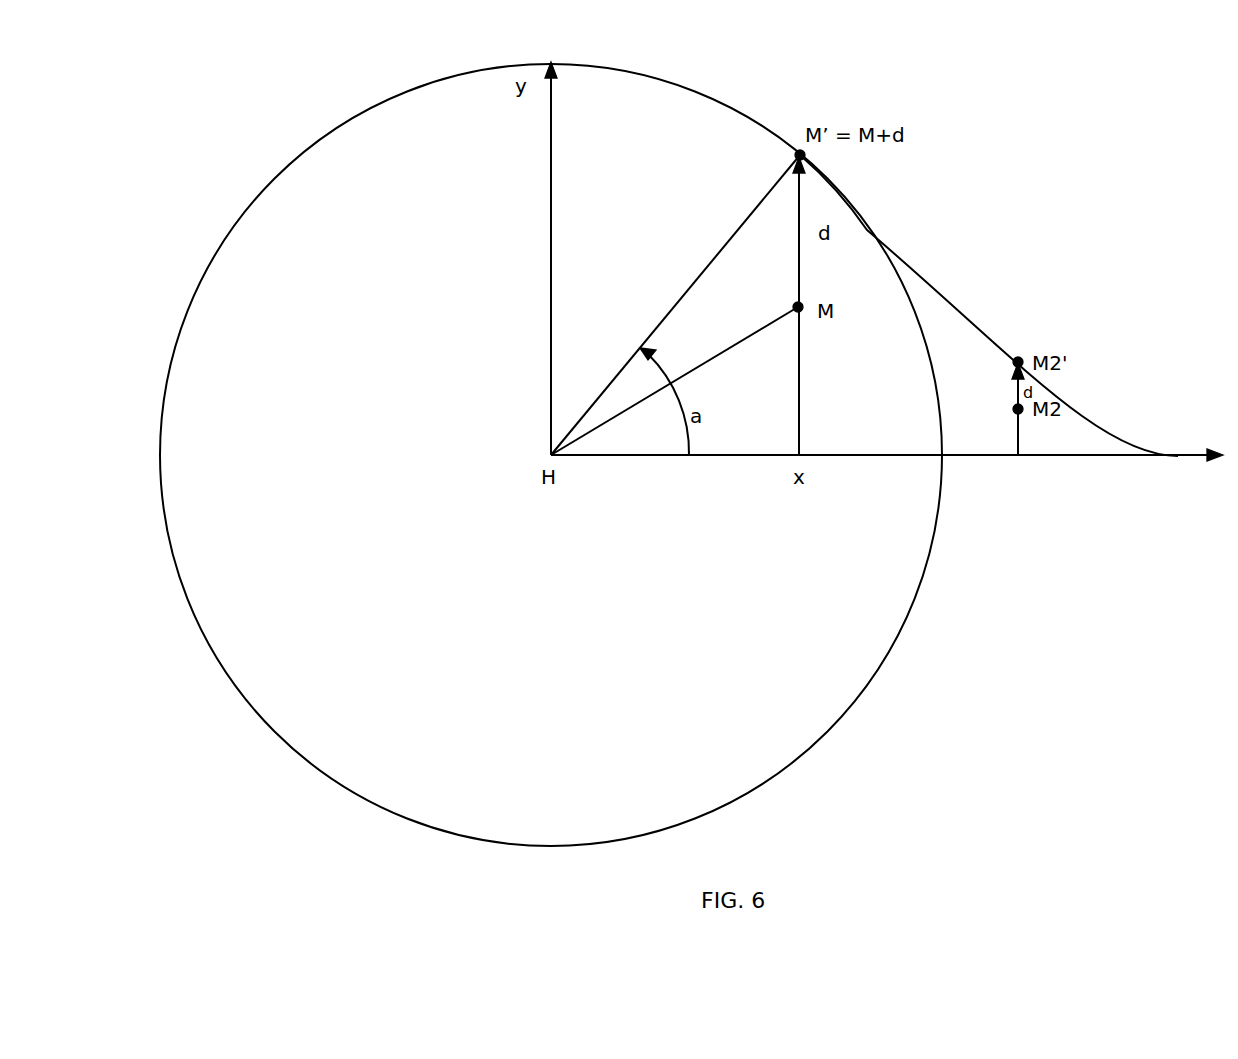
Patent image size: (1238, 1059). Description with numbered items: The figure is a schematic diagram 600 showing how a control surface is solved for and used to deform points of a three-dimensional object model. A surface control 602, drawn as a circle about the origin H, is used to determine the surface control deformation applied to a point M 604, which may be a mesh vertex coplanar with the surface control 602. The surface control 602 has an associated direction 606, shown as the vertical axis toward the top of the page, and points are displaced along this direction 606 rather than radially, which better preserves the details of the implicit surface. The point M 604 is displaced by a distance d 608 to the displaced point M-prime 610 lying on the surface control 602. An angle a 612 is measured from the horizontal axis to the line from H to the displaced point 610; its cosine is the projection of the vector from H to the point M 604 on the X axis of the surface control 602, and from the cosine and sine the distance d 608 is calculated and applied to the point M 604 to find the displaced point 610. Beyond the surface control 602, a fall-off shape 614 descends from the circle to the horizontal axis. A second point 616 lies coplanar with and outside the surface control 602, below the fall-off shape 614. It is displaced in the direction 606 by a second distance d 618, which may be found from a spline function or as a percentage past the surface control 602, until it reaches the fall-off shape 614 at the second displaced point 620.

The schematic diagram 600 is at (255, 78).
The surface control 602 is at (859, 695).
The point M 604 is at (796, 306).
The direction 606 is at (551, 238).
The distance d 608 is at (798, 265).
The point M' 610 is at (792, 153).
The angle a 612 is at (654, 354).
The fall-off shape 614 is at (958, 312).
The point M2 616 is at (1018, 409).
The distance d 618 is at (1018, 385).
The point M2' 620 is at (1018, 362).